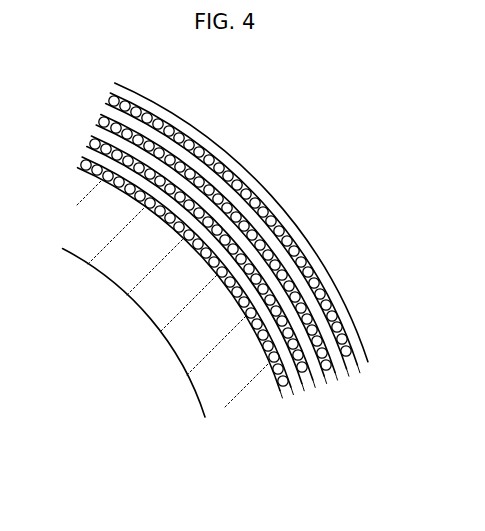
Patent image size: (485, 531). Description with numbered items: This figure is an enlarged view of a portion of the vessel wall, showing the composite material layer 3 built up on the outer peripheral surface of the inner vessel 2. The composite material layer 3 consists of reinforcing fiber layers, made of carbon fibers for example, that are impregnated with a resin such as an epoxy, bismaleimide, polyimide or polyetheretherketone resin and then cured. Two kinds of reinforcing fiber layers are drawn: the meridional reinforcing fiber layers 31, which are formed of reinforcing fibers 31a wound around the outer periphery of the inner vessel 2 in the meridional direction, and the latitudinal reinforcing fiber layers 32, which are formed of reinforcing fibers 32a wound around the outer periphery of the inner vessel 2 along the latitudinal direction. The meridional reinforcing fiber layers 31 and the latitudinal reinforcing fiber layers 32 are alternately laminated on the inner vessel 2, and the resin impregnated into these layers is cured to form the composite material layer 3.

The inner vessel 2 is at (237, 373).
The composite material layer 3 is at (232, 271).
The meridional reinforcing fiber layers 31 is at (362, 275).
The reinforcing fibers 31a is at (258, 182).
The latitudinal reinforcing fiber layers 32 is at (352, 367).
The reinforcing fibers 32a is at (287, 229).